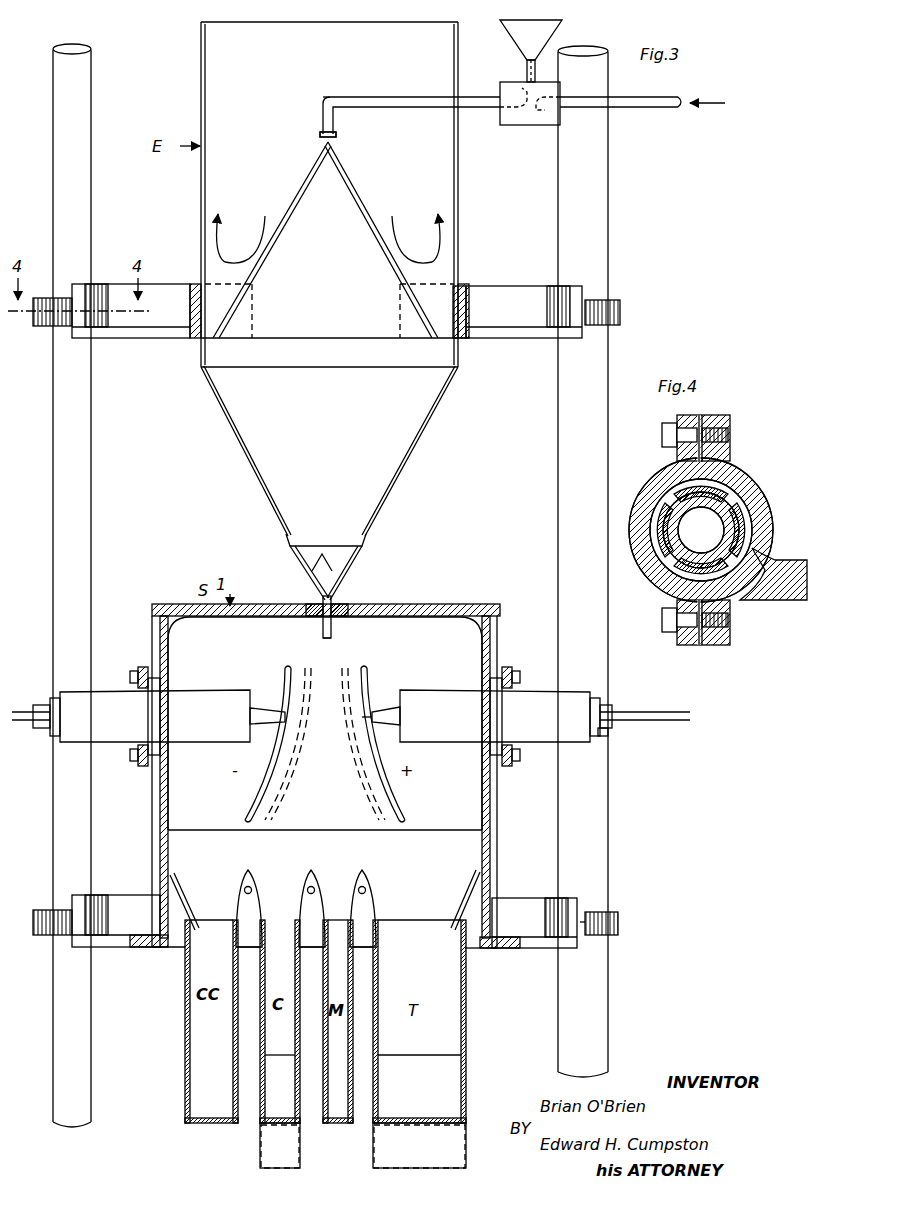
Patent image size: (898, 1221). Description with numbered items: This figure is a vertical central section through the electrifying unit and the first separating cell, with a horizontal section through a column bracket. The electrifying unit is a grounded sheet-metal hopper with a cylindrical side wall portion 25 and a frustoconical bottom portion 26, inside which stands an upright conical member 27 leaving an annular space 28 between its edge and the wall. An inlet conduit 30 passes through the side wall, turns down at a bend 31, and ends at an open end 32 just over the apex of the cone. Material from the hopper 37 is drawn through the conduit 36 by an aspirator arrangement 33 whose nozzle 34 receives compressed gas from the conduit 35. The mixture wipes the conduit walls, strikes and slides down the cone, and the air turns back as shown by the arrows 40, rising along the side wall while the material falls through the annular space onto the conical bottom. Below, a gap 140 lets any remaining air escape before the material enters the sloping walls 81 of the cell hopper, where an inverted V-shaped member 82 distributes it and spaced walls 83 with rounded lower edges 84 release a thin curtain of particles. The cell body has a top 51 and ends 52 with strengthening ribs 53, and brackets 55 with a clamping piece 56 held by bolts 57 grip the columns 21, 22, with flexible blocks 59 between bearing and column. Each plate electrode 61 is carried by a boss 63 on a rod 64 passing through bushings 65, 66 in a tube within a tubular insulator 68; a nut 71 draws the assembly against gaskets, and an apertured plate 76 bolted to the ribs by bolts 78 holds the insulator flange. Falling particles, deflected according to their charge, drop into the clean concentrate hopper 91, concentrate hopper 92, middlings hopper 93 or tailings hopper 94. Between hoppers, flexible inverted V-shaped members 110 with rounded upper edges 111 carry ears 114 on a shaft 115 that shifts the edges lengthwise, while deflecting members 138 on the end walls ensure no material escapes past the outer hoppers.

In FIG. 3, the stationary column 21 is at (88, 246).
In FIG. 4, the stationary column 21 is at (699, 531).
In FIG. 3, the column 22 is at (606, 240).
In FIG. 3, the cylindrical side wall portion 25 is at (460, 200).
In FIG. 3, the frustoconical bottom portion 26 is at (414, 440).
In FIG. 3, the upright conical member 27 is at (262, 252).
In FIG. 3, the annular space 28 is at (218, 340).
In FIG. 3, the inlet conduit 30 is at (405, 96).
In FIG. 3, the bend 31 is at (322, 100).
In FIG. 3, the open end 32 is at (336, 136).
In FIG. 3, the aspirator arrangement 33 is at (530, 118).
In FIG. 3, the nozzle 34 is at (548, 68).
In FIG. 3, the conduit 35 is at (630, 96).
In FIG. 3, the conduit 36 is at (526, 66).
In FIG. 3, the hopper 37 is at (505, 21).
In FIG. 3, the arrows 40 is at (260, 228).
In FIG. 3, the top 51 is at (425, 604).
In FIG. 3, the ends 52 is at (170, 800).
In FIG. 3, the strengthening ribs 53 is at (152, 800).
In FIG. 3, the brackets 55 is at (128, 946).
In FIG. 4, the brackets 55 is at (752, 480).
In FIG. 3, the clamping piece 56 is at (36, 937).
In FIG. 4, the clamping piece 56 is at (656, 486).
In FIG. 3, the bolts 57 is at (606, 915).
In FIG. 4, the bolts 57 is at (662, 426).
In FIG. 4, the blocks 59 is at (738, 514).
In FIG. 3, the electrodes 61 is at (286, 676).
In FIG. 3, the boss 63 is at (368, 728).
In FIG. 3, the rod 64 is at (24, 710).
In FIG. 3, the metallic bushing 65 is at (395, 700).
In FIG. 3, the metallic bushing 66 is at (640, 712).
In FIG. 3, the tubular insulator 68 is at (325, 716).
In FIG. 3, the nut 71 is at (602, 740).
In FIG. 3, the apertured plate 76 is at (140, 670).
In FIG. 3, the bolts 78 is at (132, 758).
In FIG. 3, the sloping walls 81 is at (355, 566).
In FIG. 3, the inverted V-shaped member 82 is at (318, 565).
In FIG. 3, the spaced walls 83 is at (334, 628).
In FIG. 3, the rounded lower edges 84 is at (322, 636).
In FIG. 3, the clean concentrate hopper 91 is at (184, 1076).
In FIG. 3, the concentrate hopper 92 is at (258, 1108).
In FIG. 3, the middlings hopper 93 is at (352, 1112).
In FIG. 3, the tailings hopper 94 is at (466, 1096).
In FIG. 3, the inverted V-shaped member 110 is at (236, 895).
In FIG. 3, the rounded upper edge 111 is at (262, 900).
In FIG. 3, the ear 114 is at (300, 890).
In FIG. 3, the shaft 115 is at (255, 890).
In FIG. 3, the deflecting members 138 is at (200, 890).
In FIG. 3, the gap 140 is at (365, 535).